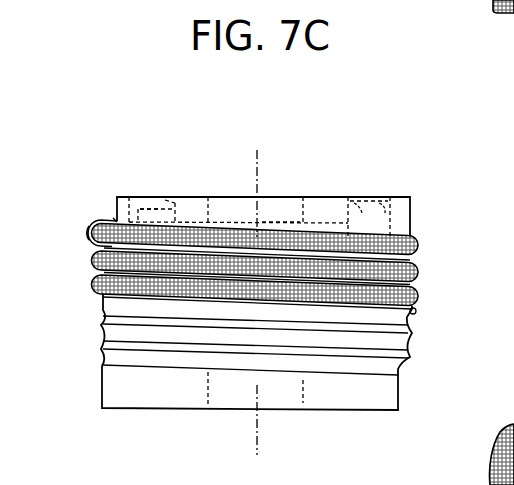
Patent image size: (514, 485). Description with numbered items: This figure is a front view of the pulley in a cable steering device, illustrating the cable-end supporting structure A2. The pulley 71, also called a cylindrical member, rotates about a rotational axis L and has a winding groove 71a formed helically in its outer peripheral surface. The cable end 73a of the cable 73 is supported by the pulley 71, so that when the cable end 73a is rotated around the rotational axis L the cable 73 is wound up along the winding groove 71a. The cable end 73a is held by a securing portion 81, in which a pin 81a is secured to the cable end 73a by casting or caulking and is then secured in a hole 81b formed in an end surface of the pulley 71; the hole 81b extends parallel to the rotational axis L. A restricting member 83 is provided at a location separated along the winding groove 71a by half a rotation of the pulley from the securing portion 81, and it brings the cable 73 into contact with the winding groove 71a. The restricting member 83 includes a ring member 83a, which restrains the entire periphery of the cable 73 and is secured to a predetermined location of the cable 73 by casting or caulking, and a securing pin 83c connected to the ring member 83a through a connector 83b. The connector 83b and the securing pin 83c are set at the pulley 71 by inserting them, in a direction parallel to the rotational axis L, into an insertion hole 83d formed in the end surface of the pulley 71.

The pulley 71 is at (219, 192).
The winding groove 71a is at (409, 343).
The cable 73 is at (420, 272).
The cable end 73a is at (282, 218).
The securing portion 81 is at (437, 110).
The pin 81a is at (356, 203).
The hole 81b is at (381, 203).
The restricting member 83 is at (105, 162).
The ring member 83a is at (88, 226).
The connector 83b is at (113, 218).
The securing pin 83c is at (143, 209).
The insertion hole 83d is at (165, 200).
The cable-end supporting structure A2 is at (176, 124).
The rotational axis L is at (257, 157).